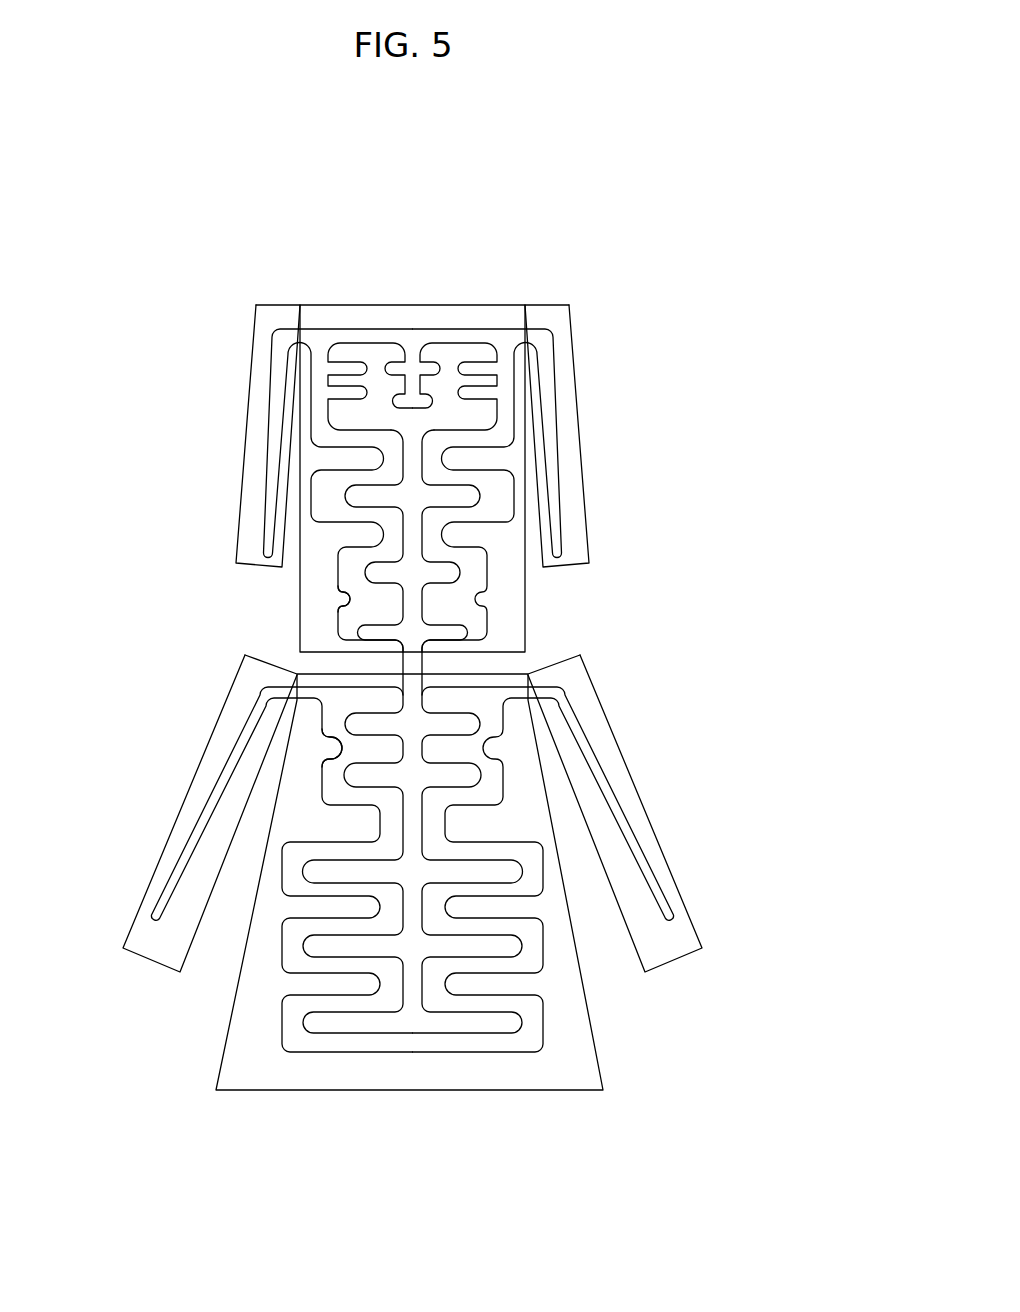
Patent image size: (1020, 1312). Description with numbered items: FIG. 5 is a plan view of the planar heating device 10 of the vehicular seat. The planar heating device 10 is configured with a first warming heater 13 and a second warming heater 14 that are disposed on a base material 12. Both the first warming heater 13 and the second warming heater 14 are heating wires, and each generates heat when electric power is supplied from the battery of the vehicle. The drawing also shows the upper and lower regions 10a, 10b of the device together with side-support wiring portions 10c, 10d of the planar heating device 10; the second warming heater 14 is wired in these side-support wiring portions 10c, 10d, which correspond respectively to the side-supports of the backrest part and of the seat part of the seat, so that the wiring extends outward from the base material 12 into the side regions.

The planar heating device 10 is at (471, 306).
The upper heating portion 10a is at (375, 355).
The lower heating portion 10b is at (293, 826).
The side-support wiring portion 10c is at (250, 425).
The side-support wiring portion 10d is at (190, 816).
The base material 12 is at (313, 556).
The first warming heater 13 is at (437, 765).
The second warming heater 14 is at (328, 768).